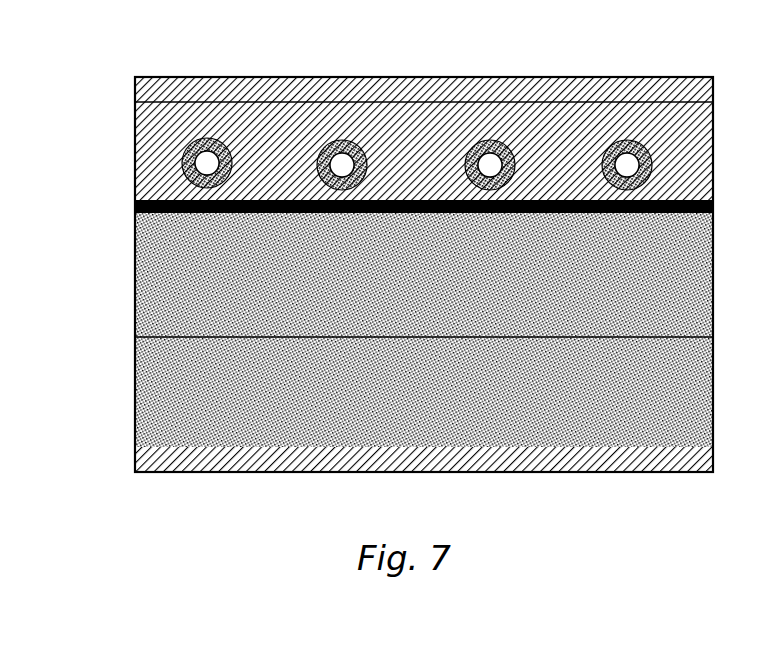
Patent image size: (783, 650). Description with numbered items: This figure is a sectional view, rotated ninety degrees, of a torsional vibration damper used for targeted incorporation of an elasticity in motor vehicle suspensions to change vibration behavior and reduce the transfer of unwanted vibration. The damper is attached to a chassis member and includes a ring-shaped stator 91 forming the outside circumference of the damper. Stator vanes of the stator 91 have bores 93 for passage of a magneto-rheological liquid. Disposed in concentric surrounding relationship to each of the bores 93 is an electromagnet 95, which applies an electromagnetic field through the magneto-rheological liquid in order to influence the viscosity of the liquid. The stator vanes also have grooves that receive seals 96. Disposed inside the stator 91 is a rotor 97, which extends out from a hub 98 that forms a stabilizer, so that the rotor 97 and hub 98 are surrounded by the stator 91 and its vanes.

The stator 91 is at (133, 115).
The bores 93 is at (183, 165).
The electromagnet 95 is at (203, 164).
The seals 96 is at (133, 200).
The hub 98 is at (170, 285).
The rotor 97 is at (143, 372).